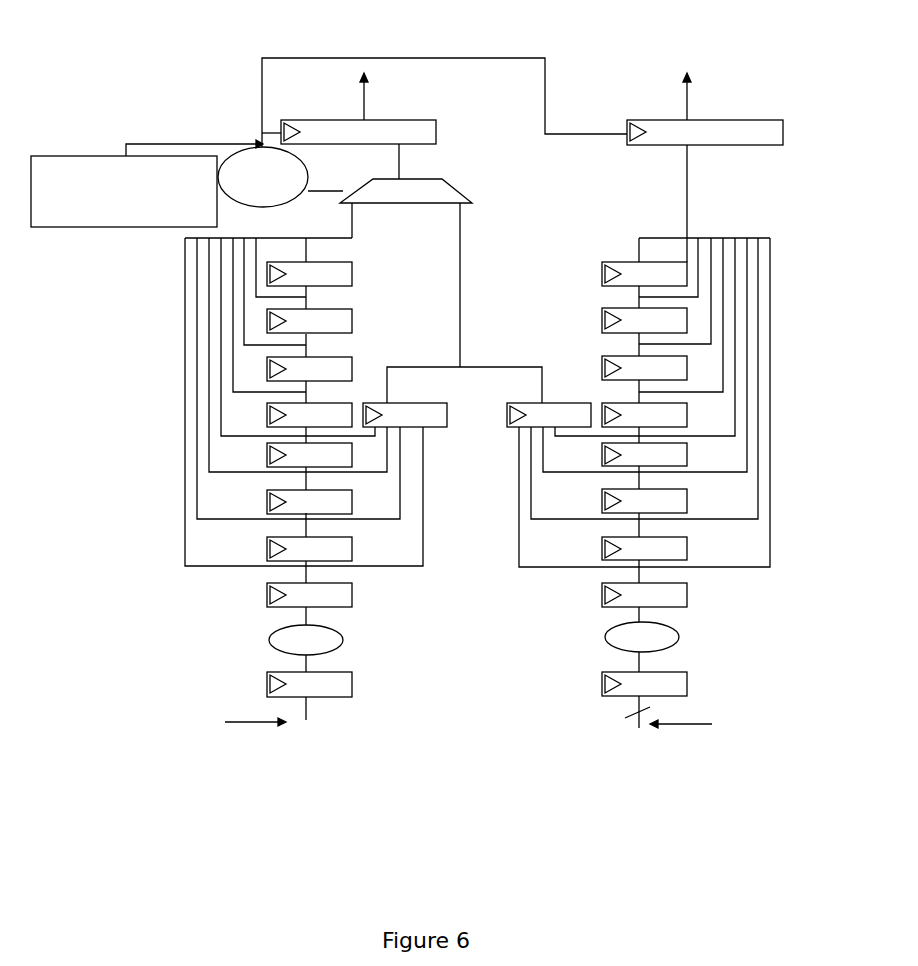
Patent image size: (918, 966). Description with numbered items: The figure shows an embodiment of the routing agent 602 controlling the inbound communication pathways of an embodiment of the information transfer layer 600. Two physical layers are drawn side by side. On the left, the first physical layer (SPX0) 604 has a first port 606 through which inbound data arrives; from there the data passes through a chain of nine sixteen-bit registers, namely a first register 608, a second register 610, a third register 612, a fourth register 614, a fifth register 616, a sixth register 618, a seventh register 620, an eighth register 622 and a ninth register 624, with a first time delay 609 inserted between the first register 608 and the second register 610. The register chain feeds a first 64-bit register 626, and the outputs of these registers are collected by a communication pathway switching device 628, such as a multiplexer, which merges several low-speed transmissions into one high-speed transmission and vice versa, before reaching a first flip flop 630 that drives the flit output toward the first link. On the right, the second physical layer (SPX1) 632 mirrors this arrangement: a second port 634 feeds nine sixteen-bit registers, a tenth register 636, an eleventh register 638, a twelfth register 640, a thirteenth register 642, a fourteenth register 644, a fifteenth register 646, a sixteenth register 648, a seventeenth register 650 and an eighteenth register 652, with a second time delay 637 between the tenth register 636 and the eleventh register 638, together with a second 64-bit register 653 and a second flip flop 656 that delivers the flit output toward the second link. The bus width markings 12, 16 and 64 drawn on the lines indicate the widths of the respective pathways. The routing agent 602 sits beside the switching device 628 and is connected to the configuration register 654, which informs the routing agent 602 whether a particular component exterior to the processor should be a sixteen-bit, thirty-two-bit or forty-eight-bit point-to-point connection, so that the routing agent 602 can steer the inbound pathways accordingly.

The information transfer layer 600 is at (444, 78).
The routing agent 602 is at (283, 177).
The first physical layer (SPX0) 604 is at (300, 757).
The first port 606 is at (237, 722).
The first register 608 is at (309, 696).
The first time delay 609 is at (306, 640).
The second register 610 is at (309, 595).
The third register 612 is at (309, 549).
The fourth register 614 is at (309, 502).
The fifth register 616 is at (309, 455).
The sixth register 618 is at (309, 415).
The seventh register 620 is at (309, 369).
The eighth register 622 is at (309, 321).
The ninth register 624 is at (309, 274).
The first 64-bit register 626 is at (452, 397).
The communication pathway switching device 628 is at (406, 273).
The first flip flop 630 is at (358, 119).
The second physical layer (SPX1) 632 is at (647, 767).
The second port 634 is at (690, 719).
The tenth register 636 is at (644, 700).
The second time delay 637 is at (642, 637).
The eleventh register 638 is at (644, 595).
The twelfth register 640 is at (644, 548).
The thirteenth register 642 is at (644, 501).
The fourteenth register 644 is at (644, 454).
The fifteenth register 646 is at (644, 415).
The sixteenth register 648 is at (644, 368).
The seventeenth register 650 is at (644, 320).
The eighteenth register 652 is at (644, 274).
The second 64-bit register 653 is at (549, 415).
The configuration register 654 is at (147, 183).
The second flip flop 656 is at (705, 160).
The 12-bit bus width 12 is at (364, 214).
The 16-bit bus width 16 is at (292, 708).
The 64-bit bus width 64 is at (412, 379).